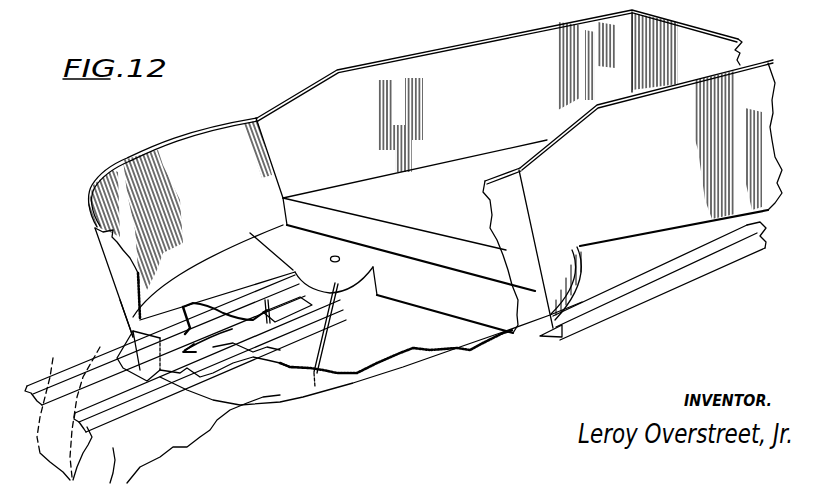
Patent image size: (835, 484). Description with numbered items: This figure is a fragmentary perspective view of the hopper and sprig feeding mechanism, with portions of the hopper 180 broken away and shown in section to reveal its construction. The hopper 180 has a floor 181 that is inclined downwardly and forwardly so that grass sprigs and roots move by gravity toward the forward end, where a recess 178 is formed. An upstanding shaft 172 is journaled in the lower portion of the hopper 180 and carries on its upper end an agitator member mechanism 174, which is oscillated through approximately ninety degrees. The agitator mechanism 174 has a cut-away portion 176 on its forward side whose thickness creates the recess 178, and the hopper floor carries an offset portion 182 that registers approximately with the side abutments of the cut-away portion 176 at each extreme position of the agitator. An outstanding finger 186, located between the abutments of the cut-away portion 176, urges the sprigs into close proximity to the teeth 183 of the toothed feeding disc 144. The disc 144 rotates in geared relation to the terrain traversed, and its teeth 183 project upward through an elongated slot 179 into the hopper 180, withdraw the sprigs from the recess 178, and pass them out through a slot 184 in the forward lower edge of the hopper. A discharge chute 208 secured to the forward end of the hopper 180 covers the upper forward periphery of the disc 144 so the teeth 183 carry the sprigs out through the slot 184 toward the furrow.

The toothed feeding disc 144 is at (200, 323).
The upstanding shaft 172 is at (337, 256).
The agitator member mechanism 174 is at (513, 337).
The cut-away portion 176 is at (452, 347).
The recess 178 is at (363, 340).
The elongated slot 179 is at (316, 314).
The hopper 180 is at (375, 83).
The floor 181 is at (452, 160).
The offset portion 182 is at (404, 247).
The teeth 183 is at (187, 307).
The slot 184 is at (135, 320).
The outstanding finger 186 is at (280, 365).
The discharge chute 208 is at (66, 366).